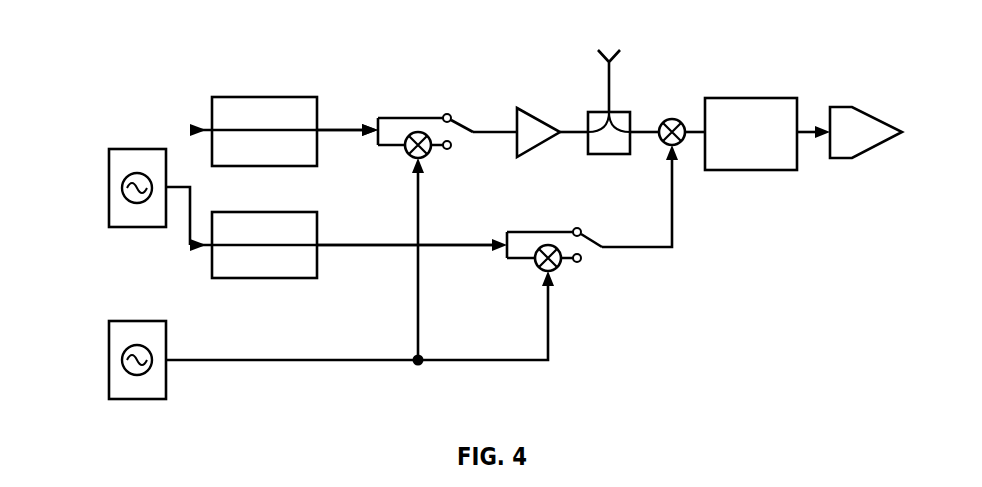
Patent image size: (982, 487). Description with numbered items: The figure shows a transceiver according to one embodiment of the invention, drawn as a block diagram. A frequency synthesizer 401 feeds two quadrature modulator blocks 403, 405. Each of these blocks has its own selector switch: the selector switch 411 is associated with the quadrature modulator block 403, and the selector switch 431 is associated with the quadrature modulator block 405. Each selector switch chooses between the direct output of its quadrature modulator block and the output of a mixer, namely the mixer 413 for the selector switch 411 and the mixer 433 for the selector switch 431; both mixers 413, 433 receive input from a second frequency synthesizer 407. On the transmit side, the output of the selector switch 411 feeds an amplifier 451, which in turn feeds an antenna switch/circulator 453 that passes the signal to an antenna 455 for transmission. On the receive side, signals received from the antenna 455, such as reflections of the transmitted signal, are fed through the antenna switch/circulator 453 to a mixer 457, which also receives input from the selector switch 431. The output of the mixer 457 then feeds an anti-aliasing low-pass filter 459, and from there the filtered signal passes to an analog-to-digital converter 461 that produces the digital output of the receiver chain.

The frequency synthesizer 401 is at (109, 210).
The quadrature modulator block 403 is at (265, 97).
The quadrature modulator block 405 is at (265, 212).
The frequency synthesizer 407 is at (109, 360).
The selector switch 411 is at (460, 92).
The mixer 413 is at (431, 154).
The selector switch 431 is at (635, 224).
The mixer 433 is at (560, 268).
The amplifier 451 is at (532, 133).
The antenna switch/circulator 453 is at (628, 112).
The antenna 455 is at (608, 94).
The mixer 457 is at (686, 143).
The anti-aliasing low-pass filter 459 is at (750, 170).
The analog-to-digital converter 461 is at (838, 158).